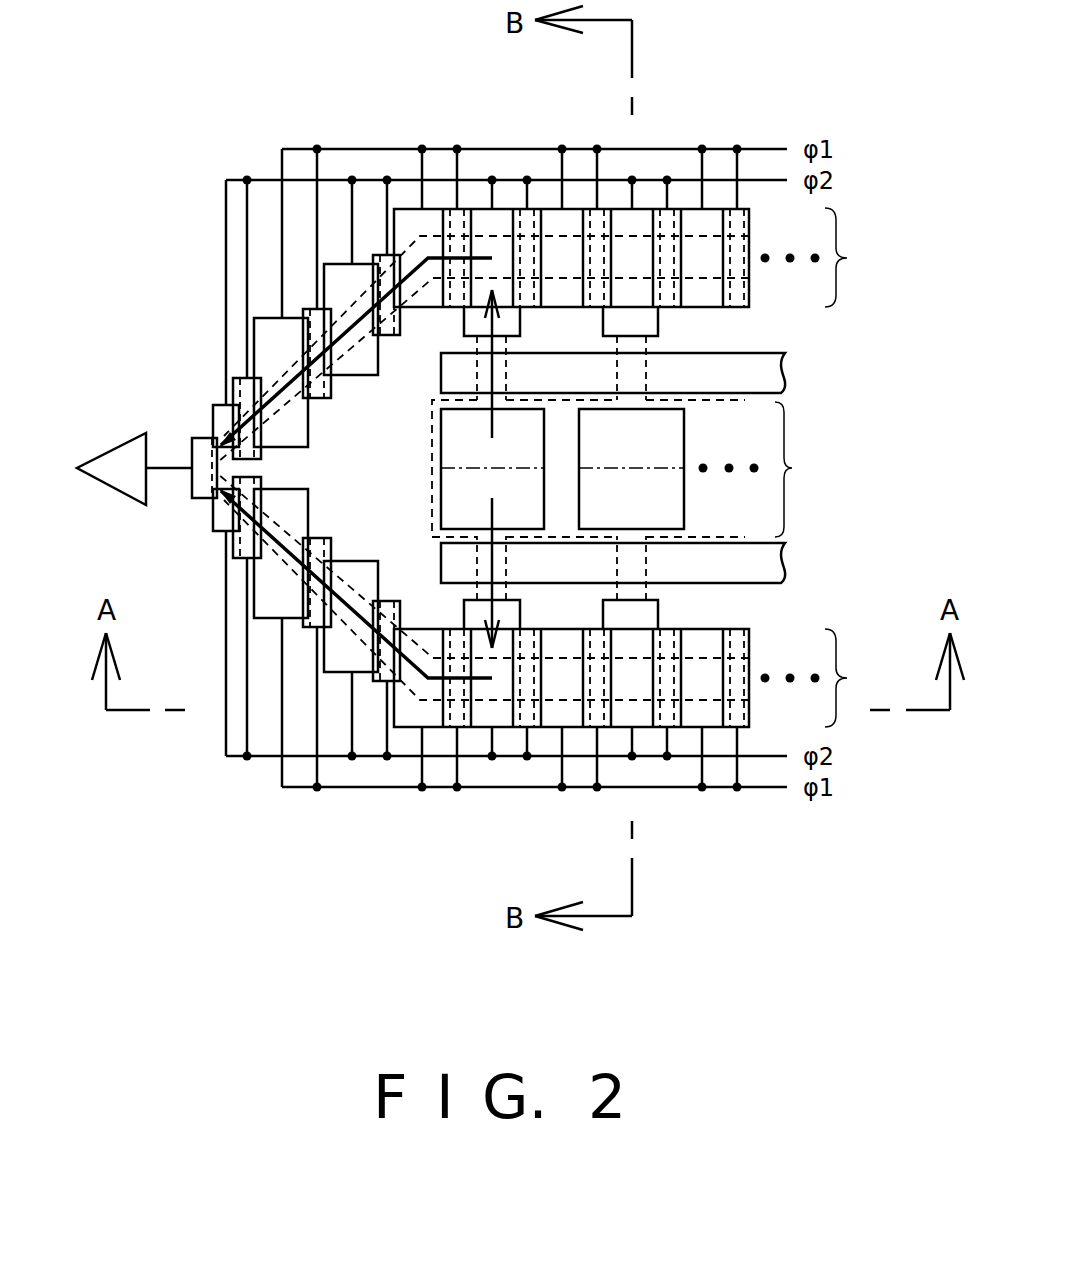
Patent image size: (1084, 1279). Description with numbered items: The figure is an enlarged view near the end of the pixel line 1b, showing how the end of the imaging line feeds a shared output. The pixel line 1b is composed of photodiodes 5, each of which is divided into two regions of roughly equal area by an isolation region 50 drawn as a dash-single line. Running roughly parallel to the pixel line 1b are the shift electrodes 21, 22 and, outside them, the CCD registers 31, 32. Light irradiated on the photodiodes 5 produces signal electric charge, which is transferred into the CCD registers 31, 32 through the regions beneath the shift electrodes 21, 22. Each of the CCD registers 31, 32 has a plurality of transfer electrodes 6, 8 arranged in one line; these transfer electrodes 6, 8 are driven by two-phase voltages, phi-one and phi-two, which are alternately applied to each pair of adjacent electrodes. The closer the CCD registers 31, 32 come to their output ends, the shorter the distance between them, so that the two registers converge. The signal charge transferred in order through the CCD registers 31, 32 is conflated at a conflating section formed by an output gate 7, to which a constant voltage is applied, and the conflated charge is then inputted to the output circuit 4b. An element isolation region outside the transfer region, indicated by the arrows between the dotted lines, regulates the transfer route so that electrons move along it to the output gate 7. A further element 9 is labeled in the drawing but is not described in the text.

The pixel line 1b is at (641, 469).
The output circuit 4b is at (104, 455).
The photodiode 5 is at (684, 428).
The transfer electrode 6 is at (711, 222).
The output gate 7 is at (191, 440).
The transfer electrode 8 is at (456, 222).
The charge transfer channel 9 is at (283, 368).
The shift electrode 21 is at (786, 380).
The shift electrode 22 is at (786, 557).
The CCD register 31 is at (644, 304).
The CCD register 32 is at (644, 631).
The isolation region 50 is at (455, 468).